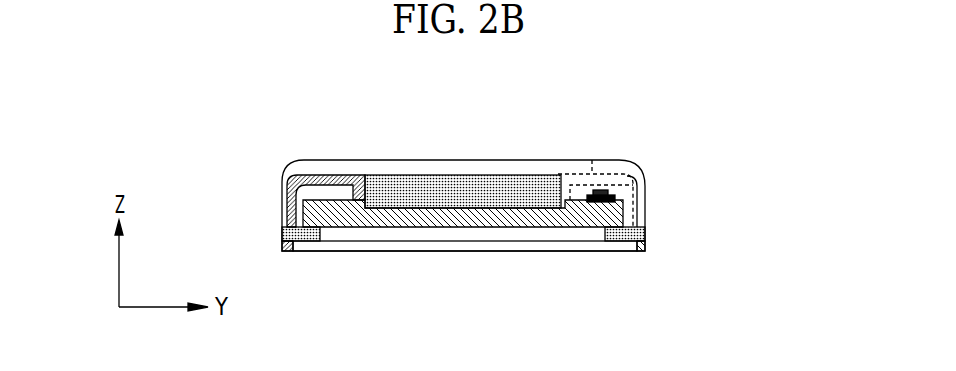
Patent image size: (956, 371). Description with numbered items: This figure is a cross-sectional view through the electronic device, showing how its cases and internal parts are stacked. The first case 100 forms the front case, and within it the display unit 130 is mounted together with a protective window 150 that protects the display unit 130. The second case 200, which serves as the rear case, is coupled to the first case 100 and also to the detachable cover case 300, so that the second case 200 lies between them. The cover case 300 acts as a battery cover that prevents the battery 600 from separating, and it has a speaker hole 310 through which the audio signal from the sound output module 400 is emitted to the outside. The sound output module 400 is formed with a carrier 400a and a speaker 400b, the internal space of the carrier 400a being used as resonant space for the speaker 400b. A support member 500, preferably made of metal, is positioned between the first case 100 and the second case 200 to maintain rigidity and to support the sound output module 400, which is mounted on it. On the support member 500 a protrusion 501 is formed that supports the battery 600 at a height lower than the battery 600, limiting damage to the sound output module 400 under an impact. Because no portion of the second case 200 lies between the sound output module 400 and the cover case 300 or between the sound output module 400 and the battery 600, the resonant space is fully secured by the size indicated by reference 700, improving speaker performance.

The first case 100 is at (292, 235).
The display unit 130 is at (467, 230).
The protective window 150 is at (378, 245).
The second case 200 is at (288, 200).
The cover case 300 is at (562, 170).
The speaker hole 310 is at (583, 167).
The sound output module 400 is at (682, 187).
The carrier 400a is at (622, 200).
The speaker 400b is at (613, 192).
The support member 500 is at (511, 213).
The protrusion 501 is at (349, 207).
The battery 600 is at (438, 176).
The resonant space size 700 is at (598, 177).